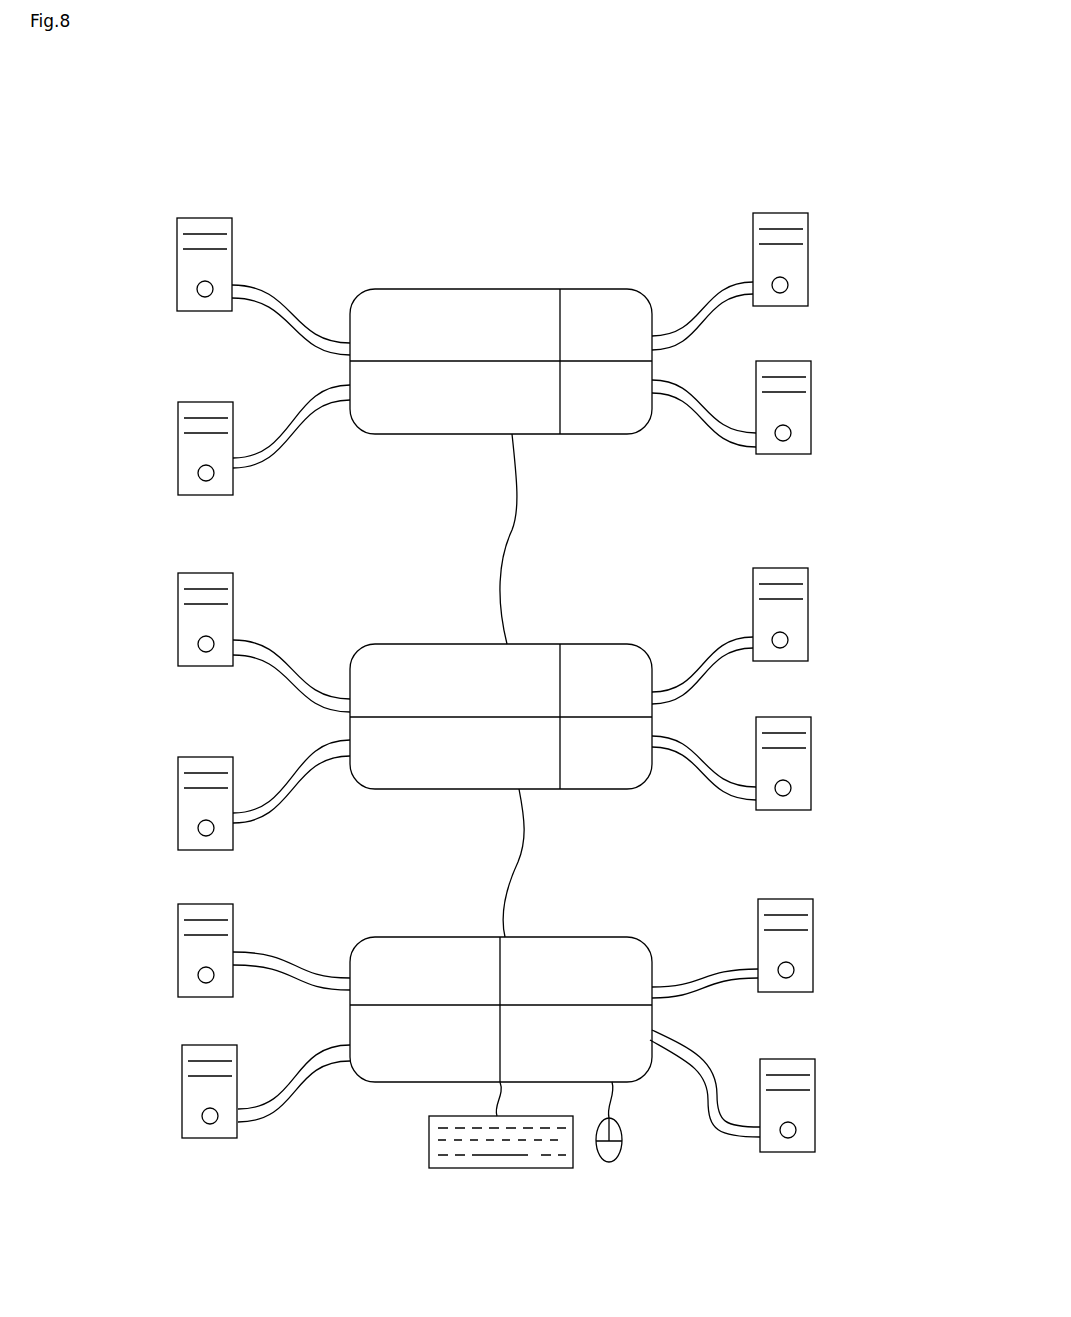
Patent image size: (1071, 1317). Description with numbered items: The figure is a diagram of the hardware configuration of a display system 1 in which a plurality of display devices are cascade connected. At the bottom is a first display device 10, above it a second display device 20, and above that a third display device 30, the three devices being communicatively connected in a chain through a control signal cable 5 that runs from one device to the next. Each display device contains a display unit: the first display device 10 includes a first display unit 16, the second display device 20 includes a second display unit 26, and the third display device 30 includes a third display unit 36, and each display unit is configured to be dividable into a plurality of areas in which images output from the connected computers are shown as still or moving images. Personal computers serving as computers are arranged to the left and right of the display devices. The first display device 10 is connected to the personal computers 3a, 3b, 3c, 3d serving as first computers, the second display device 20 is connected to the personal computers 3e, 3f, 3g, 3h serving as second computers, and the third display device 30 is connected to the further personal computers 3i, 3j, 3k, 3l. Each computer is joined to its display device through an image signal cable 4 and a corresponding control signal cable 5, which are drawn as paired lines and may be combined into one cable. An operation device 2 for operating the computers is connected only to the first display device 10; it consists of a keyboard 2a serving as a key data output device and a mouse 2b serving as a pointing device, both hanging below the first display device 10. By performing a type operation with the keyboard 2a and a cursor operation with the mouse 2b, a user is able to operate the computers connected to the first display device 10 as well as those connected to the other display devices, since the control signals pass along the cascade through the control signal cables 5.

The display system 1 is at (950, 36).
The operation device 2 is at (525, 1151).
The keyboard 2a is at (470, 1168).
The mouse 2b is at (608, 1163).
The personal computer 3a is at (792, 898).
The personal computer 3b is at (796, 1058).
The personal computer 3c is at (212, 903).
The personal computer 3d is at (215, 1044).
The personal computer 3e is at (790, 567).
The personal computer 3f is at (793, 716).
The personal computer 3g is at (212, 572).
The personal computer 3h is at (212, 756).
The personal computer 3i is at (790, 212).
The personal computer 3j is at (793, 360).
The personal computer 3k is at (212, 217).
The personal computer 3l is at (210, 401).
The image signal cable 4 is at (281, 295).
The control signal cable 5 is at (278, 315).
The first display device 10 is at (434, 911).
The first display unit 16 is at (604, 936).
The second display device 20 is at (413, 607).
The second display unit 26 is at (598, 643).
The third display device 30 is at (413, 252).
The third display unit 36 is at (598, 288).